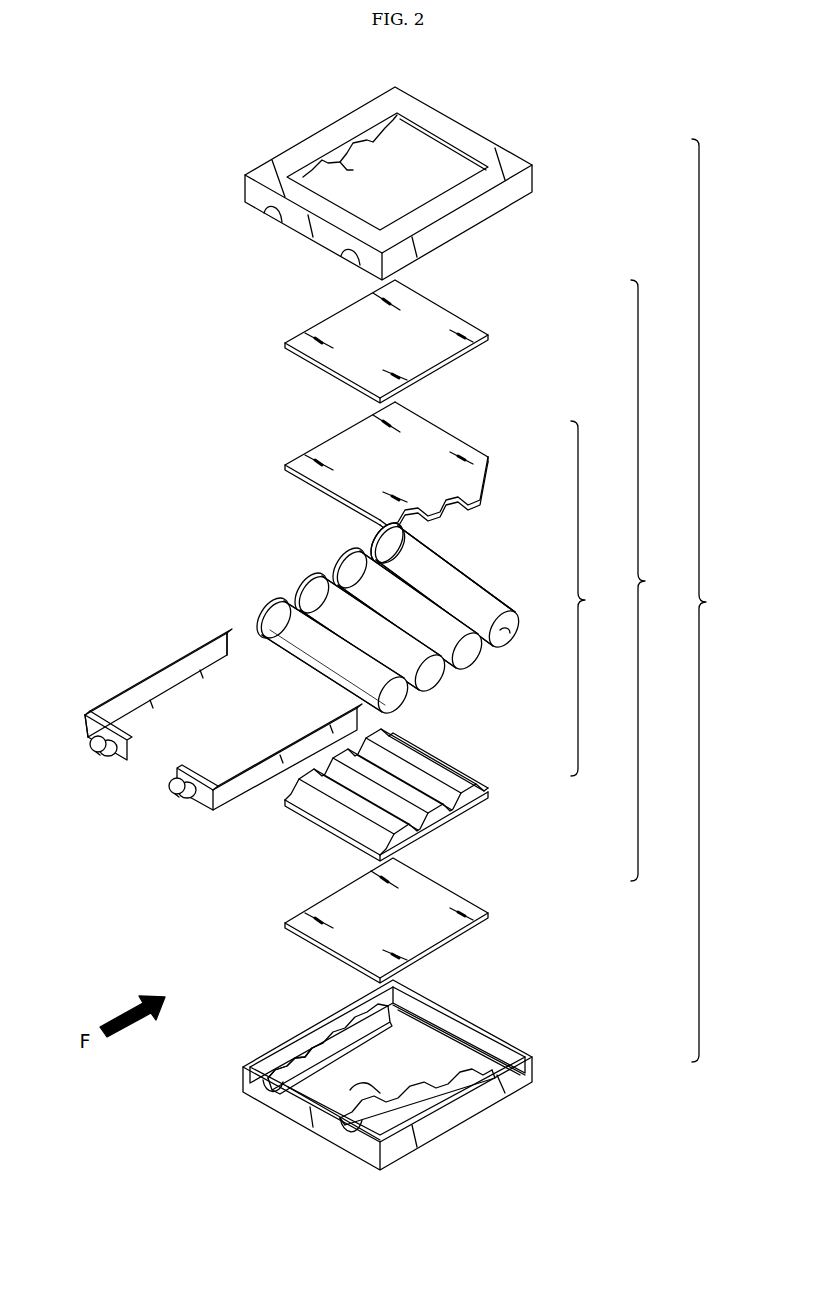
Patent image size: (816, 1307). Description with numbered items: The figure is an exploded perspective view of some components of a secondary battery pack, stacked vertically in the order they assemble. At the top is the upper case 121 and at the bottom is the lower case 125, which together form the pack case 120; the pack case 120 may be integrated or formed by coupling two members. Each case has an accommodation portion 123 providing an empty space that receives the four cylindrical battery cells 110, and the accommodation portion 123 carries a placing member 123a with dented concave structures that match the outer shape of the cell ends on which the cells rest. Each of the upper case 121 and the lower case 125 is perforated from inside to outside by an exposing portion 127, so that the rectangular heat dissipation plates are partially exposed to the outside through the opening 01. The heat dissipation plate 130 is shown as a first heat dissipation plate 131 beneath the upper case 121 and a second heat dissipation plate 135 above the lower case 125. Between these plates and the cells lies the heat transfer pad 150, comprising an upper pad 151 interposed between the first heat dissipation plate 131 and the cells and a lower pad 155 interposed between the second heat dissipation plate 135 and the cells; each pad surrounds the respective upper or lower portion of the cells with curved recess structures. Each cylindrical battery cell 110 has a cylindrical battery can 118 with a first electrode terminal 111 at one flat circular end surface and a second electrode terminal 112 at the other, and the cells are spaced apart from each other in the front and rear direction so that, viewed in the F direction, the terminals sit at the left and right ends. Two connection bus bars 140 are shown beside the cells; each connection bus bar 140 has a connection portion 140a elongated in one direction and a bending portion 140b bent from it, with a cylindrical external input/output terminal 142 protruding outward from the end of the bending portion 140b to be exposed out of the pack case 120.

The pack case 120 is at (717, 600).
The upper case 121 is at (537, 153).
The lower case 125 is at (537, 1045).
The accommodation portion 123 is at (336, 157).
The placing member 123a is at (305, 1058).
The exposing portion 127 is at (436, 194).
The opening 01 is at (421, 148).
The heat dissipation plate 130 is at (656, 580).
The first heat dissipation plate 131 is at (457, 325).
The second heat dissipation plate 135 is at (457, 903).
The heat transfer pad 150 is at (596, 598).
The upper pad 151 is at (497, 451).
The lower pad 155 is at (495, 783).
The cylindrical battery cell 110 is at (503, 587).
The first electrode terminal 111 is at (373, 552).
The second electrode terminal 112 is at (507, 635).
The battery can 118 is at (460, 590).
The connection bus bar 140 is at (137, 668).
The connection portion 140a is at (215, 642).
The bending portion 140b is at (103, 712).
The external input/output terminal 142 is at (98, 750).